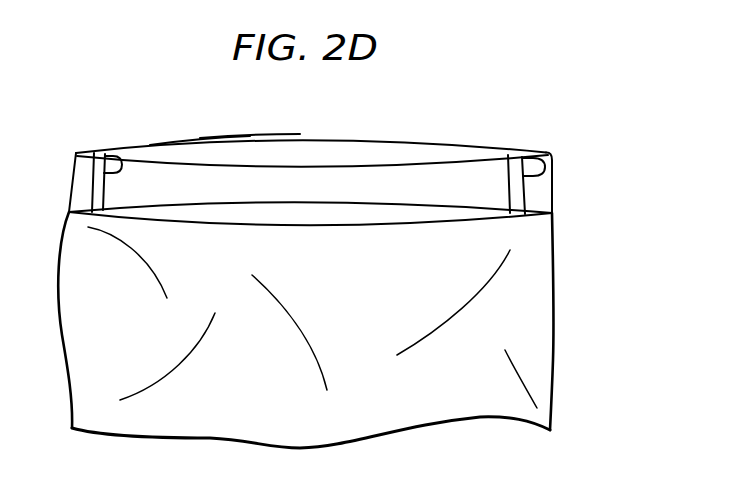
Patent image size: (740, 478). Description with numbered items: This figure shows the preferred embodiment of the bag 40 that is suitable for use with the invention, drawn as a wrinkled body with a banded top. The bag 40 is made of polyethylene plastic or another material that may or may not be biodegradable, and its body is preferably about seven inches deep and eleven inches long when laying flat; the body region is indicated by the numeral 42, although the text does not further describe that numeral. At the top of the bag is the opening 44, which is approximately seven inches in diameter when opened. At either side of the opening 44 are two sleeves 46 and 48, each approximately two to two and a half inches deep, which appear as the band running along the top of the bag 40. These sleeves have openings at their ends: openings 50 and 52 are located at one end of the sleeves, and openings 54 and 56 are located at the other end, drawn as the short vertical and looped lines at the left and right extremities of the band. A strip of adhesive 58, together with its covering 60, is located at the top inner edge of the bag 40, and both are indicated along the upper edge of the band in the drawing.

The bag 40 is at (590, 202).
The bag body 42 is at (557, 390).
The opening 44 is at (420, 157).
The sleeve 46 is at (360, 212).
The sleeve 48 is at (295, 152).
The opening 50 is at (94, 181).
The opening 52 is at (120, 151).
The opening 54 is at (508, 171).
The opening 56 is at (552, 156).
The strip of adhesive 58 is at (187, 150).
The covering 60 is at (240, 157).